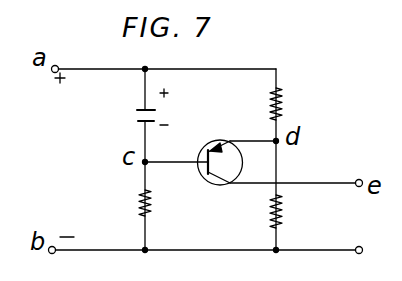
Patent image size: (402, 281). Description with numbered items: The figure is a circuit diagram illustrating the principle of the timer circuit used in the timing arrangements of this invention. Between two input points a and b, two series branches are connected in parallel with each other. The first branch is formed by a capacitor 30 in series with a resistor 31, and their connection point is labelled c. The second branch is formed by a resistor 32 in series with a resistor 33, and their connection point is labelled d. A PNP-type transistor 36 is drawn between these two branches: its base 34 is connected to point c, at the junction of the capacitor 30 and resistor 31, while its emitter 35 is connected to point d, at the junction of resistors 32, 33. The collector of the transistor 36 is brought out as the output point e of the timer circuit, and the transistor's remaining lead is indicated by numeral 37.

The capacitor 30 is at (136, 107).
The resistor 31 is at (139, 205).
The resistor 32 is at (283, 93).
The resistor 33 is at (283, 206).
The base 34 is at (200, 158).
The emitter 35 is at (231, 141).
The PNP-type transistor 36 is at (203, 180).
The transistor emitter 37 is at (229, 184).